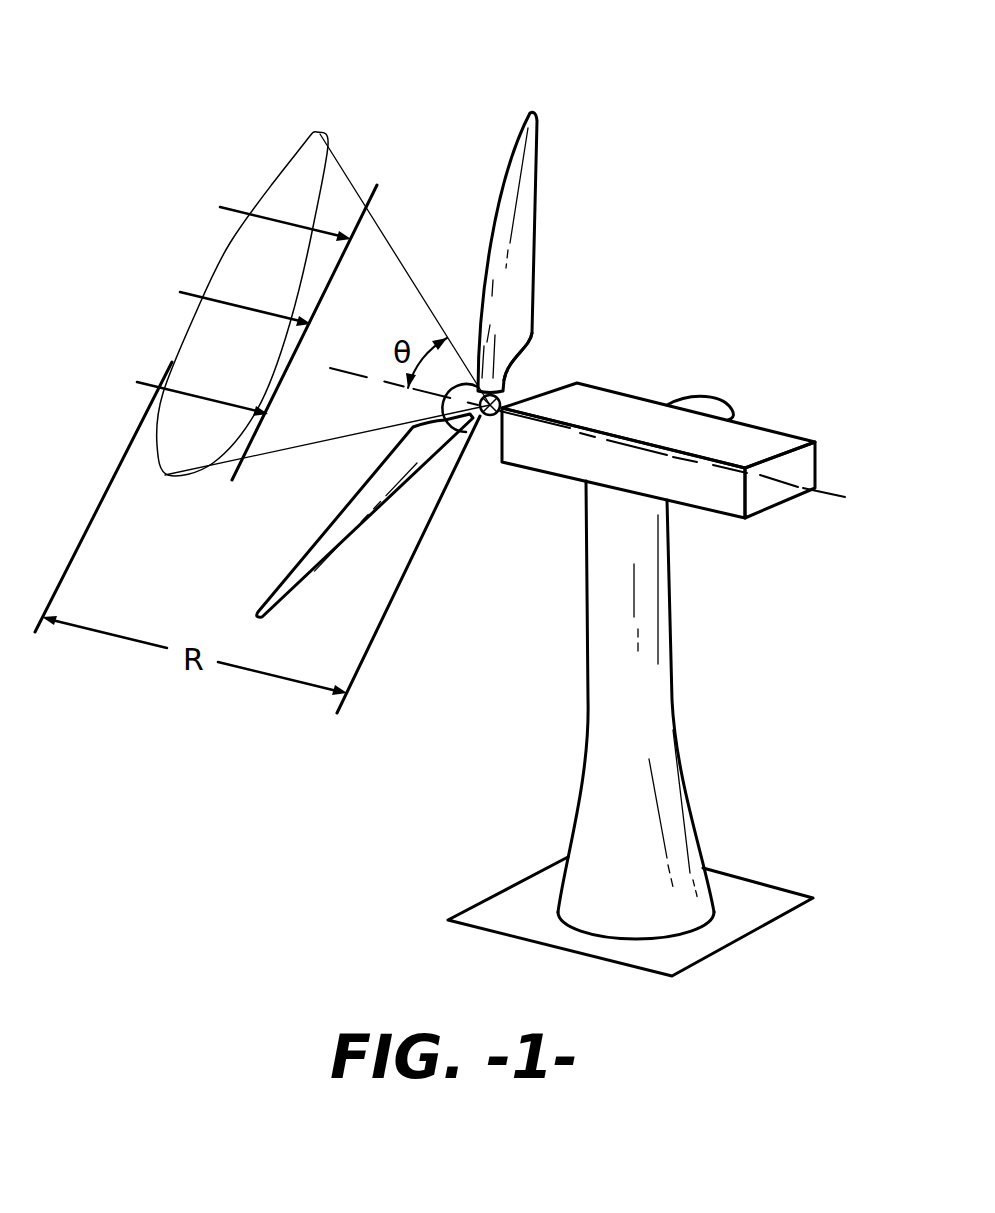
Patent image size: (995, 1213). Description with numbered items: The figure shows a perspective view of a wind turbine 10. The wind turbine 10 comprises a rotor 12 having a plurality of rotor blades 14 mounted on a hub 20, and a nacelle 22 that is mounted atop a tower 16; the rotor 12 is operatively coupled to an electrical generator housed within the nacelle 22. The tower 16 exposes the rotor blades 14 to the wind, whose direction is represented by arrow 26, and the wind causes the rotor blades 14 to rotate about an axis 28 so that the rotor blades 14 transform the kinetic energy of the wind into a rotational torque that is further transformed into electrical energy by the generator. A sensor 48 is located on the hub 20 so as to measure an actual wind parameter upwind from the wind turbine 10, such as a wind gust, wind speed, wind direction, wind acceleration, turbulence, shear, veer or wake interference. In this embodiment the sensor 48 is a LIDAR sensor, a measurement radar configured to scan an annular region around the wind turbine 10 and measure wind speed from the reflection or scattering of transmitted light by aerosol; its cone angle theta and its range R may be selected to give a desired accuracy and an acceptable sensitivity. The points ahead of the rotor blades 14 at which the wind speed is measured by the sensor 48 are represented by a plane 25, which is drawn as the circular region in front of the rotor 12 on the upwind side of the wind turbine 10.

The wind turbine 10 is at (494, 491).
The rotor 12 is at (570, 362).
The rotor blades 14 is at (536, 227).
The tower 16 is at (686, 821).
The hub 20 is at (478, 440).
The nacelle 22 is at (817, 458).
The plane 25 is at (371, 198).
The arrow 26 is at (192, 293).
The axis 28 is at (368, 377).
The LIDAR sensor 48 is at (537, 370).